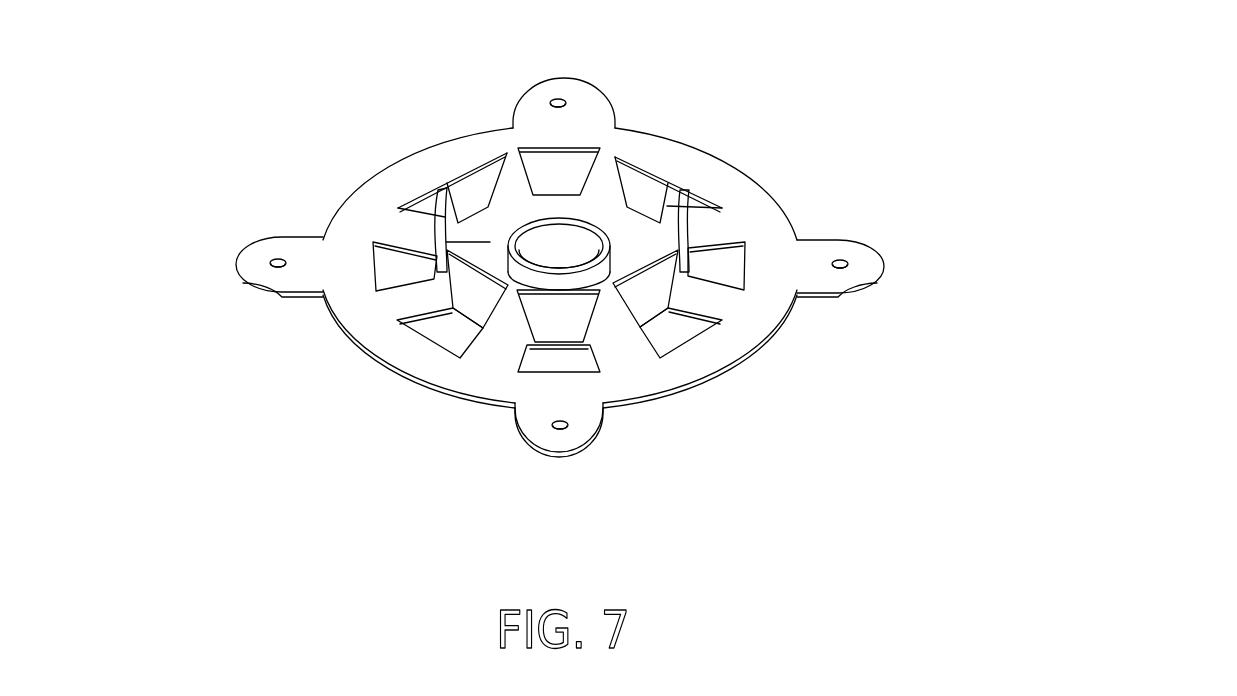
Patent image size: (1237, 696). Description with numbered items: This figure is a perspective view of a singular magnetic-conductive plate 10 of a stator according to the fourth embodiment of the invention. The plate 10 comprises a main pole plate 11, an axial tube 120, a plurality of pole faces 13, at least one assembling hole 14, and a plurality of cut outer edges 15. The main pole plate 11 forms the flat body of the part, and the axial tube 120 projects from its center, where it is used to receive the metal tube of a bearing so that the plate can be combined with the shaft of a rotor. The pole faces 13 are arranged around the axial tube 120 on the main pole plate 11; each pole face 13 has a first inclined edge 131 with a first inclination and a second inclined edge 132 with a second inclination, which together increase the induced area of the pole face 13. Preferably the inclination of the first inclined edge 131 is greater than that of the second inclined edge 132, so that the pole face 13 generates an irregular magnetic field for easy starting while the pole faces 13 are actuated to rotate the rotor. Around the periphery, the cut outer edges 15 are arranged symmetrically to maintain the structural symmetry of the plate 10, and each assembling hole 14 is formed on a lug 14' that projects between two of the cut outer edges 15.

The singular magnetic-conductive plate 10 is at (600, 263).
The main pole plate 11 is at (442, 188).
The pole face 13 is at (476, 203).
The first inclined edge 131 is at (473, 178).
The second inclined edge 132 is at (513, 152).
The axial tube 120 is at (591, 217).
The assembling hole 14 is at (869, 249).
The lug 14' is at (878, 313).
The cut outer edge 15 is at (758, 352).